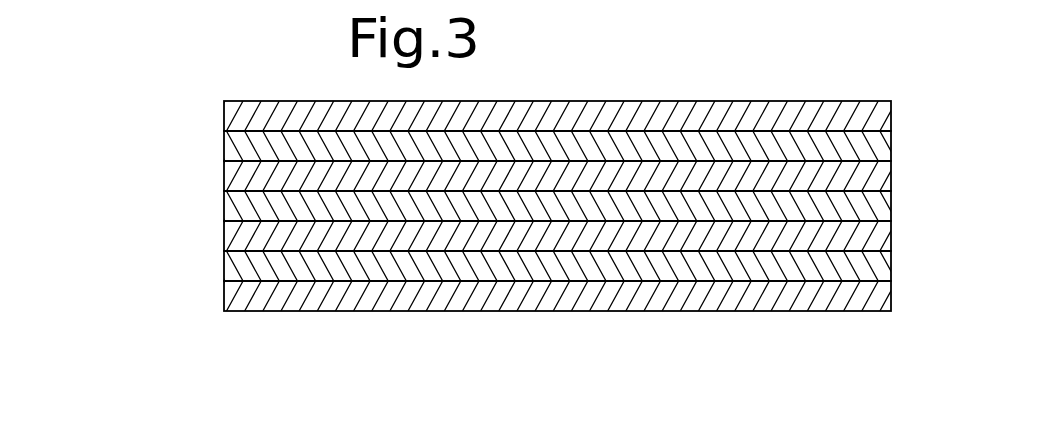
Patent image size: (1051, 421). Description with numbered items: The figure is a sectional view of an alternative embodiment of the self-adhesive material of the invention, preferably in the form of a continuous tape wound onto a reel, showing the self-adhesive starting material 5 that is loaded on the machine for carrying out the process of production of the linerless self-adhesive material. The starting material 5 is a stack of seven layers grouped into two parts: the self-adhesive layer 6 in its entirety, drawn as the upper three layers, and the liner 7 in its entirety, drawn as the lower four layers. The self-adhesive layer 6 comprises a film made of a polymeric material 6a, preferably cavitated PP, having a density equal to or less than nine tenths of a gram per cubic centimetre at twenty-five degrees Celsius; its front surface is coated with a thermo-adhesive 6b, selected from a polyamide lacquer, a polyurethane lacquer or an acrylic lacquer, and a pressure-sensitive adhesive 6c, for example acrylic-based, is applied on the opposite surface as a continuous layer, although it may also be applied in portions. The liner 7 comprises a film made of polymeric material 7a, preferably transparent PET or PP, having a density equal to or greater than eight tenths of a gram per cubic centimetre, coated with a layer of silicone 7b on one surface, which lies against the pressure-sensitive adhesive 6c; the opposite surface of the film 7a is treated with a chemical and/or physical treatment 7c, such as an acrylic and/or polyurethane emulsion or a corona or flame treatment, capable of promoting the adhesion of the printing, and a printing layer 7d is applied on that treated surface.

The self-adhesive starting material 5 is at (543, 209).
The self-adhesive layer 6 is at (620, 104).
The film made of a polymeric material 6a is at (786, 136).
The thermo-adhesive 6b is at (838, 125).
The pressure-sensitive adhesive 6c is at (733, 178).
The liner 7 is at (628, 286).
The film made of polymeric material 7a is at (803, 238).
The layer of silicone 7b is at (630, 203).
The chemical and/or physical treatment 7c is at (748, 268).
The printing layer 7d is at (687, 290).